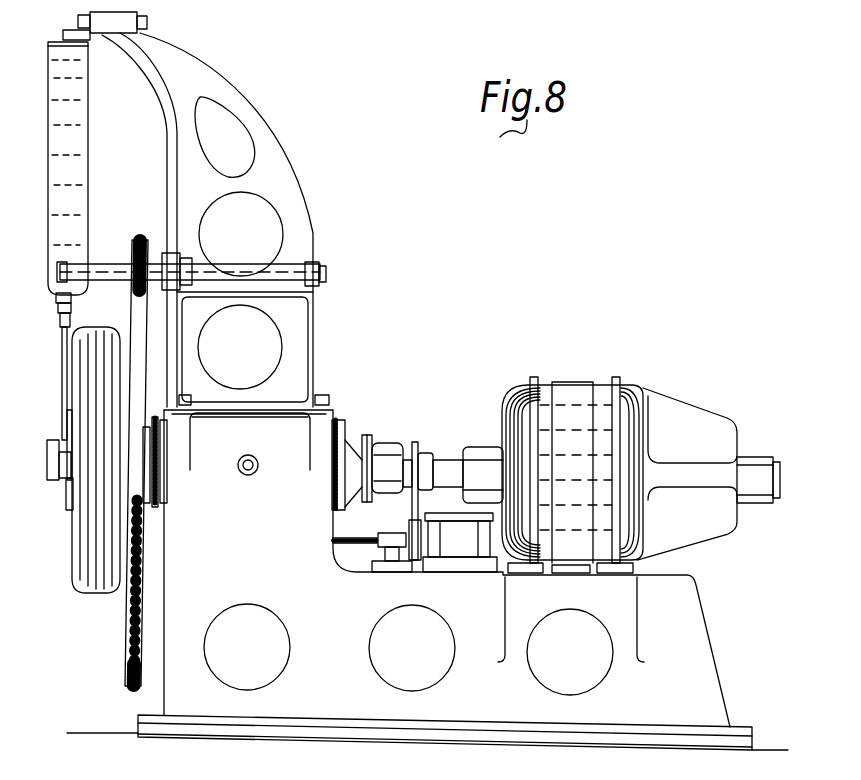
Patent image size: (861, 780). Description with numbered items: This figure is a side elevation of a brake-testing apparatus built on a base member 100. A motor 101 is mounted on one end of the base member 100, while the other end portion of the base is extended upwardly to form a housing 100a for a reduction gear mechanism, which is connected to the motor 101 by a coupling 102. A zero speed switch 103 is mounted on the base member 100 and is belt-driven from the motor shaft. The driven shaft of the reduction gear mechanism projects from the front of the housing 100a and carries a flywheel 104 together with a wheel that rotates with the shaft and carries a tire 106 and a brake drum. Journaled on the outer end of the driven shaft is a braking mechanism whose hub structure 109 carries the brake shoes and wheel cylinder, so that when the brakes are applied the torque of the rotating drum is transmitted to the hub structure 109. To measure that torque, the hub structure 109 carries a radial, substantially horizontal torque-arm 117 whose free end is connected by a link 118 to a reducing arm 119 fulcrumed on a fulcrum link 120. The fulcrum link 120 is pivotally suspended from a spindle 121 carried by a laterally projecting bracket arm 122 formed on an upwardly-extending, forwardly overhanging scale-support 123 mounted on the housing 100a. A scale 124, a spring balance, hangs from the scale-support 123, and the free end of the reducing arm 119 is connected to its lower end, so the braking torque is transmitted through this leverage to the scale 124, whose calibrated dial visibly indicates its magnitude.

The base member 100 is at (427, 580).
The housing 100a is at (300, 440).
The motor 101 is at (578, 389).
The coupling 102 is at (390, 450).
The zero speed switch 103 is at (450, 539).
The flywheel 104 is at (125, 668).
The tire 106 is at (83, 595).
The hub structure 109 is at (72, 511).
The torque-arm 117 is at (63, 479).
The link 118 is at (65, 361).
The reducing arm 119 is at (62, 329).
The fulcrum link 120 is at (58, 299).
The spindle 121 is at (107, 258).
The bracket arm 122 is at (172, 255).
The scale-support 123 is at (279, 138).
The scale 124 is at (82, 131).